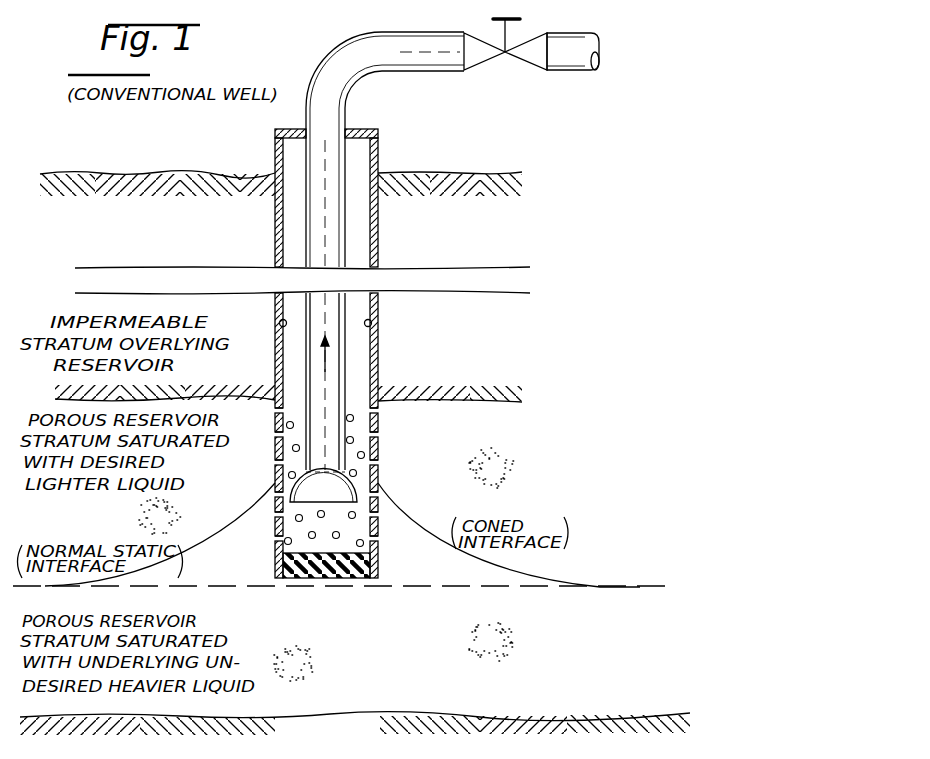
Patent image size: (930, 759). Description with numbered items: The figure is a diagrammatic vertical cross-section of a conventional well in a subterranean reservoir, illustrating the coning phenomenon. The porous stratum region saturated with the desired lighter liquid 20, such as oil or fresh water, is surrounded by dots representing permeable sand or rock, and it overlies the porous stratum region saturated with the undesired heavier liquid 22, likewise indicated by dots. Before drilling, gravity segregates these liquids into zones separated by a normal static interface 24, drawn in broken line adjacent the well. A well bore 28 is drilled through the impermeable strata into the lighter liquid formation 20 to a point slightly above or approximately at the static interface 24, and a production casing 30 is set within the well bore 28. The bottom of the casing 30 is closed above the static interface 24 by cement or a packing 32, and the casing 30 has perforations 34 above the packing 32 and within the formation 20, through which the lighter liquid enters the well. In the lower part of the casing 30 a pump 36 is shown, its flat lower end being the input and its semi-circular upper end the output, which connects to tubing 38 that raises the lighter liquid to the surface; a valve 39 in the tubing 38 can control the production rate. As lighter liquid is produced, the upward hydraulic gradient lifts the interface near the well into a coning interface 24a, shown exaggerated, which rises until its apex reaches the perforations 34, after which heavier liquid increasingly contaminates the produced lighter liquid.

The porous stratum region saturated with desired lighter liquid 20 is at (326, 491).
The porous stratum region saturated with undesired heavier liquid 22 is at (393, 652).
The normal static interface 24 is at (33, 588).
The coning interface 24a is at (240, 526).
The well bore 28 is at (389, 323).
The production casing 30 is at (378, 213).
The packing 32 is at (343, 579).
The perforations 34 is at (378, 410).
The pump 36 is at (345, 482).
The tubing 38 is at (341, 247).
The valve 39 is at (505, 53).